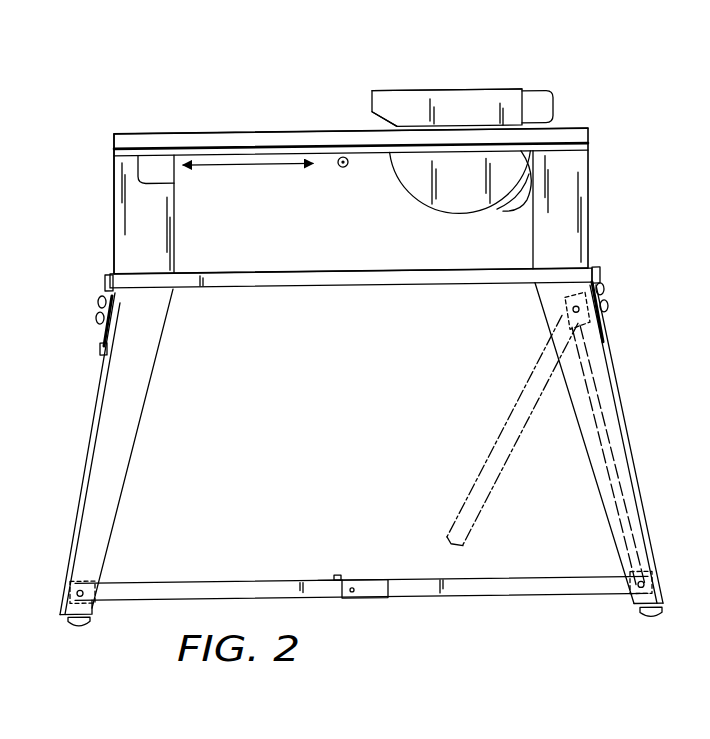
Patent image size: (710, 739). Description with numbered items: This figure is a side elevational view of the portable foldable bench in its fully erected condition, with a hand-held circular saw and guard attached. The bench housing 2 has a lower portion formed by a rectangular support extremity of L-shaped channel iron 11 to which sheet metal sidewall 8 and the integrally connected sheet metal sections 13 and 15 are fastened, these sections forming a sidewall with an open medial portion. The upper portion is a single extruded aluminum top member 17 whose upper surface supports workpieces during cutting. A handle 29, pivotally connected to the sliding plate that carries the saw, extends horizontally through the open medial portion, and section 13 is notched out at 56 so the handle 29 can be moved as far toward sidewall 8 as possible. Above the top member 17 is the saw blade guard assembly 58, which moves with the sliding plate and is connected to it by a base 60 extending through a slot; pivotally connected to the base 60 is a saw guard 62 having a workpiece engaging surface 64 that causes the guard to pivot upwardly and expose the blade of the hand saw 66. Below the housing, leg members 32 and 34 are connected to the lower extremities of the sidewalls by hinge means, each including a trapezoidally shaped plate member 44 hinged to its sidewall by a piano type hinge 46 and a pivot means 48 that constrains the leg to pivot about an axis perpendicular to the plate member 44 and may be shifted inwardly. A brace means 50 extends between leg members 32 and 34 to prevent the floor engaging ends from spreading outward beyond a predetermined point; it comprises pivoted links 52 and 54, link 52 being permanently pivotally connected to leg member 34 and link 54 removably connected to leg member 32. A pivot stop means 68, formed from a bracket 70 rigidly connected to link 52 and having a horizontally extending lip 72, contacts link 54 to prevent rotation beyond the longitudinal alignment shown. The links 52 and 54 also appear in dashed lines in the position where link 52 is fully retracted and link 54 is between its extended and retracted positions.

The housing 2 is at (597, 175).
The sidewall 8 is at (113, 160).
The top member 17 is at (233, 131).
The sheet metal section 13 is at (154, 244).
The sheet metal section 15 is at (571, 234).
The notch 56 is at (142, 183).
The handle 29 is at (344, 169).
The saw blade guard assembly 58 is at (409, 85).
The saw guard 62 is at (390, 92).
The workpiece engaging surface 64 is at (380, 121).
The base 60 is at (553, 120).
The hand saw 66 is at (502, 216).
The channel iron 11 is at (348, 287).
The piano type hinge 46 is at (104, 286).
The pivot means 48 is at (95, 304).
The plate member 44 is at (98, 346).
The leg member 32 is at (152, 358).
The leg member 34 is at (603, 422).
The link 54 is at (488, 453).
The link 52 is at (610, 474).
The brace means 50 is at (327, 567).
The lip 72 is at (338, 577).
The pivot stop means 68 is at (385, 576).
The bracket 70 is at (377, 596).